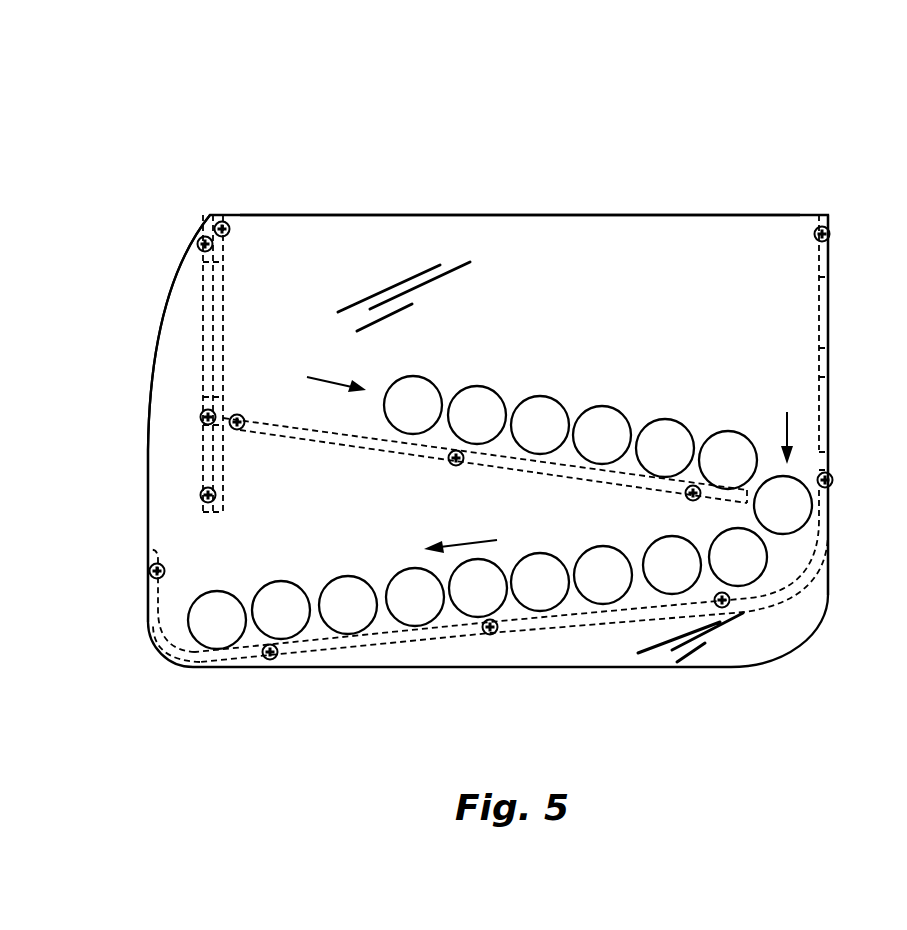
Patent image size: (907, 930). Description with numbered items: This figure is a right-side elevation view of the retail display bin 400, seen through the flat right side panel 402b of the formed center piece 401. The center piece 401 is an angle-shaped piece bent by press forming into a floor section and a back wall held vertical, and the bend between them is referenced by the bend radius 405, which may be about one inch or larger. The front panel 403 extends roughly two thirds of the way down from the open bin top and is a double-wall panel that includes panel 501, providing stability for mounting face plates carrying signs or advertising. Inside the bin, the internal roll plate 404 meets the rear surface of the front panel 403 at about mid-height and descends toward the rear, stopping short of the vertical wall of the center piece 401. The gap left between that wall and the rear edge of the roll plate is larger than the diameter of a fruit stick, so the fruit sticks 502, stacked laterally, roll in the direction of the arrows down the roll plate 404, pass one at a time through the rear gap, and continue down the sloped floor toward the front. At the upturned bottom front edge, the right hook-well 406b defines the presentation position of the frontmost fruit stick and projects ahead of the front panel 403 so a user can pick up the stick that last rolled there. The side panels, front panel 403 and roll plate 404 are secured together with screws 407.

The retail display bin 400 is at (500, 105).
The formed center piece 401 is at (828, 265).
The side panel 402b is at (665, 298).
The front panel 403 is at (203, 343).
The internal roll plate 404 is at (413, 456).
The bend radius 405 is at (797, 560).
The right hook-well 406b is at (148, 606).
The screws 407 is at (352, 640).
The panel 501 is at (225, 317).
The fruit sticks 502 is at (548, 397).